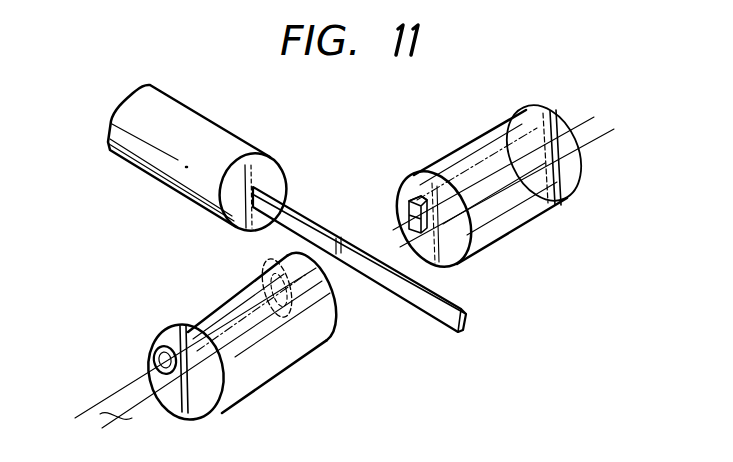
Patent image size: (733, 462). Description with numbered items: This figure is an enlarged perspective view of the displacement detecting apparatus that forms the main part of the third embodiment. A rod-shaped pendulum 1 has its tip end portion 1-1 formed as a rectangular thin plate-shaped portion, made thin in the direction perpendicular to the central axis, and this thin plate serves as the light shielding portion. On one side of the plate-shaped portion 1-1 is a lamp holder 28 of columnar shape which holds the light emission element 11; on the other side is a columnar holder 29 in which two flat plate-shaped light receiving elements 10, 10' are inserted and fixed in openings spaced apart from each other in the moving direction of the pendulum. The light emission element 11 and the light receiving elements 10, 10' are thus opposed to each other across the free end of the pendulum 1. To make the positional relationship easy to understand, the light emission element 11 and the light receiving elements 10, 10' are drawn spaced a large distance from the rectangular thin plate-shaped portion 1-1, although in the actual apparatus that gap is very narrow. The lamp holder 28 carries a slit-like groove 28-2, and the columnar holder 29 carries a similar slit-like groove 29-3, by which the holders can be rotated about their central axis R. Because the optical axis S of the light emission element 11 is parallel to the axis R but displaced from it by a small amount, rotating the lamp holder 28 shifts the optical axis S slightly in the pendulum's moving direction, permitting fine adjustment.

The pendulum 1 is at (223, 140).
The tip end portion 1-1 is at (403, 292).
The light receiving element 10 is at (388, 213).
The light receiving element 10' is at (389, 176).
The light emission element 11 is at (263, 267).
The lamp holder 28 is at (196, 331).
The slit-like groove 28-2 is at (150, 332).
The columnar holder 29 is at (506, 180).
The slit-like groove 29-3 is at (558, 174).
The optical axis S is at (62, 392).
The central axis R is at (113, 422).